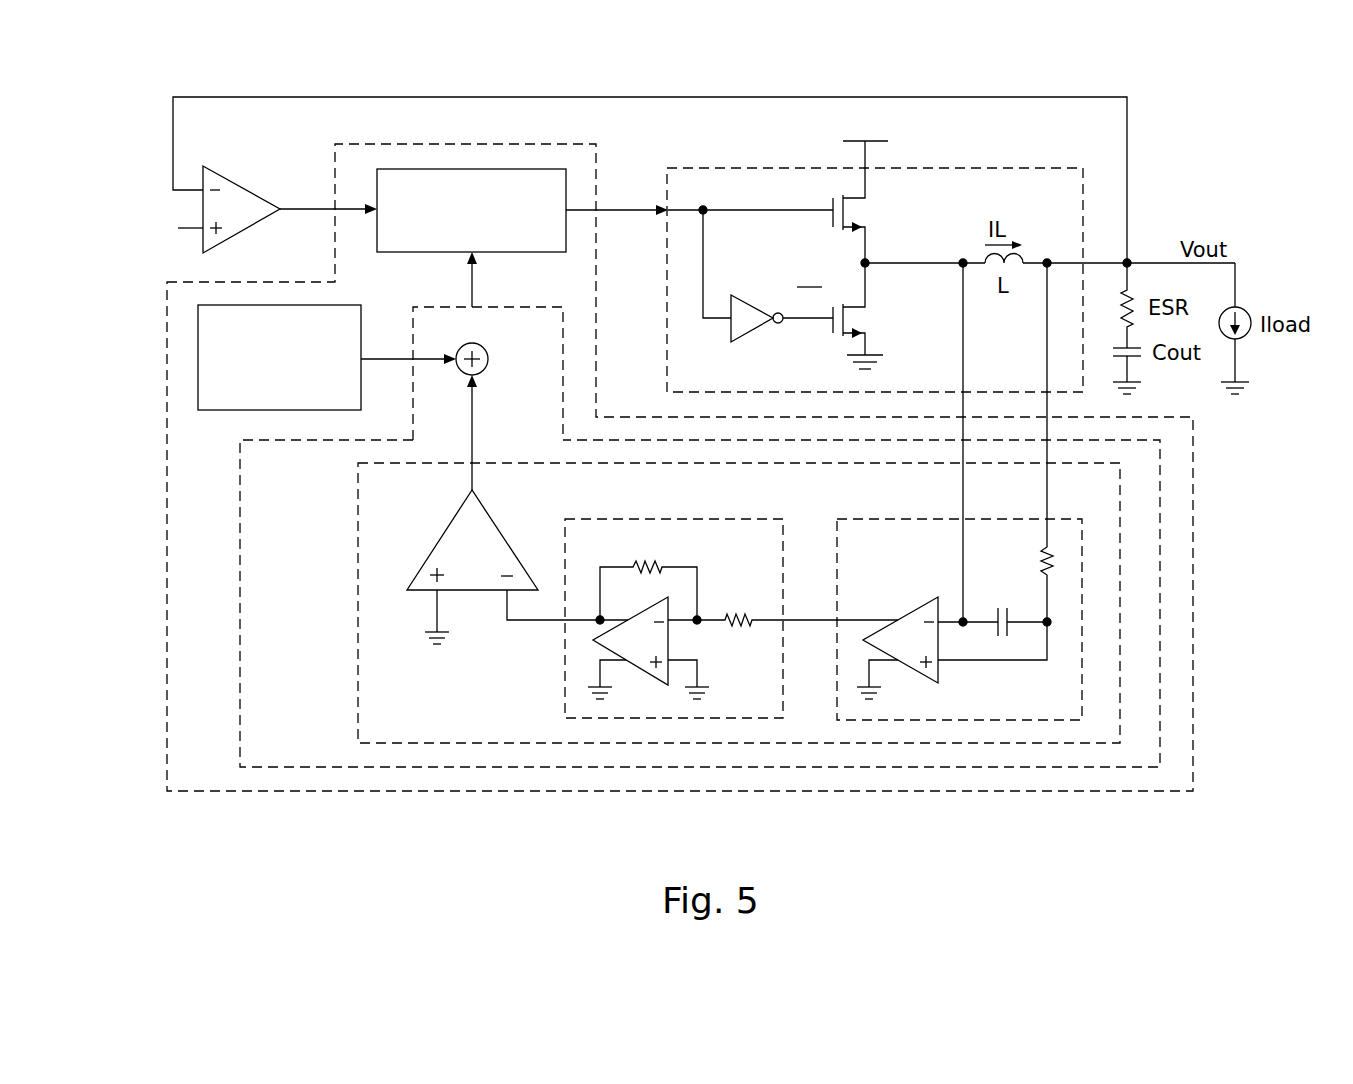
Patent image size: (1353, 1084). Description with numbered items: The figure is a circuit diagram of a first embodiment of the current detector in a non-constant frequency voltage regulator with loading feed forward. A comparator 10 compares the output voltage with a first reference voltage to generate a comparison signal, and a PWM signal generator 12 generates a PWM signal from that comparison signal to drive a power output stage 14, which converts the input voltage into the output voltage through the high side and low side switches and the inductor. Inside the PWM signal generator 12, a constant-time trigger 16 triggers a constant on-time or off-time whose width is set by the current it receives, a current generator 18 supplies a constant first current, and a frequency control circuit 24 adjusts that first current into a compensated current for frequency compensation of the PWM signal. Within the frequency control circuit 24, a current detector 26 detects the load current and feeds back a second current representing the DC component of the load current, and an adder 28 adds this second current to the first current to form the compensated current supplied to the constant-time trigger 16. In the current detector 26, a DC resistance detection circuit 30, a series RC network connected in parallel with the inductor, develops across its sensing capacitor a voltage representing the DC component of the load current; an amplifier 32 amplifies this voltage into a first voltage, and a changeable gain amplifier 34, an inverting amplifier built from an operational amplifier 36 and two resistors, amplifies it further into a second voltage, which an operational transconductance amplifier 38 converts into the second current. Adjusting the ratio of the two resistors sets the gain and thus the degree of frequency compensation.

The comparator 10 is at (238, 179).
The PWM signal generator 12 is at (167, 513).
The power output stage 14 is at (930, 167).
The constant-time trigger 16 is at (412, 252).
The current generator 18 is at (276, 305).
The frequency control circuit 24 is at (1160, 598).
The current detector 26 is at (358, 615).
The adder 28 is at (489, 356).
The DC resistance detection circuit 30 is at (897, 519).
The amplifier 32 is at (906, 597).
The changeable gain amplifier 34 is at (565, 690).
The operational amplifier 36 is at (668, 642).
The operational transconductance amplifier 38 is at (443, 537).